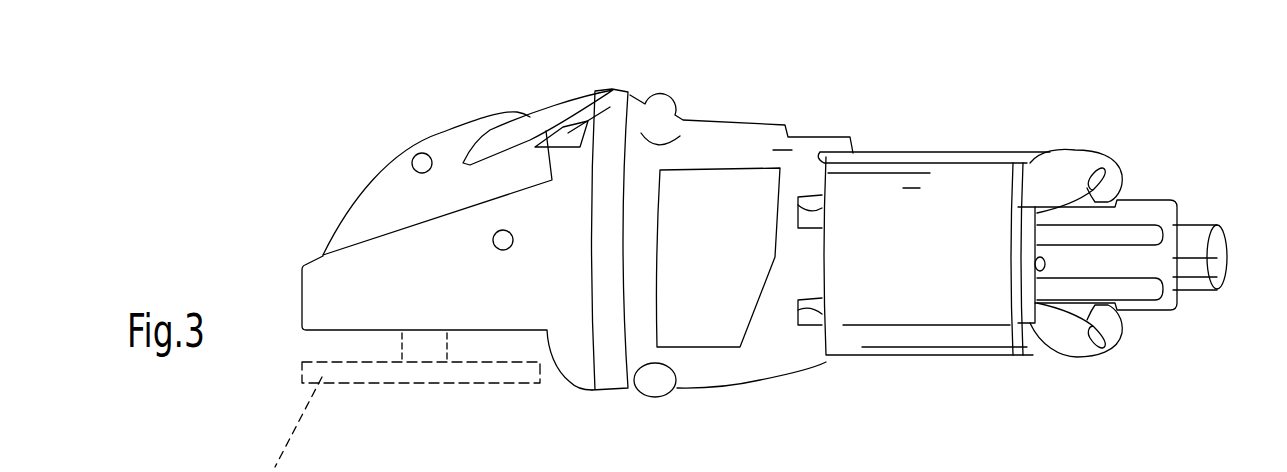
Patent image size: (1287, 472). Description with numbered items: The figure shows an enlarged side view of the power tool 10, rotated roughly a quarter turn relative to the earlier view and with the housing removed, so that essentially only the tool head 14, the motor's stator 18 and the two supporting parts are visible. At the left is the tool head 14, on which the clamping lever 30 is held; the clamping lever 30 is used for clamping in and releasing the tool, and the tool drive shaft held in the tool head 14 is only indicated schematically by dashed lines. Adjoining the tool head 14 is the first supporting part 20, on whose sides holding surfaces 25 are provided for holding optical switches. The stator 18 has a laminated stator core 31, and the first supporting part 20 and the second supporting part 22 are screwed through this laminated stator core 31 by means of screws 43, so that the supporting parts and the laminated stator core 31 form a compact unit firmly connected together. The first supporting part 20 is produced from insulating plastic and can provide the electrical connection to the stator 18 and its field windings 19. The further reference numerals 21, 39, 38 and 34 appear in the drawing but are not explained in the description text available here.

The power tool 10 is at (326, 130).
The tool head 14 is at (343, 283).
The lower housing block 21 is at (535, 288).
The clamping lever 30 is at (540, 127).
The first supporting part 20 is at (727, 143).
The holding surfaces 25 is at (733, 217).
The stator 18 is at (951, 138).
The laminated stator core 31 is at (880, 330).
The field windings 19 is at (1067, 178).
The second supporting part 22 is at (1157, 208).
The screws 43 is at (1043, 265).
The base plate 39 is at (523, 471).
The support 38 is at (663, 461).
The drive shaft 34 is at (1033, 463).